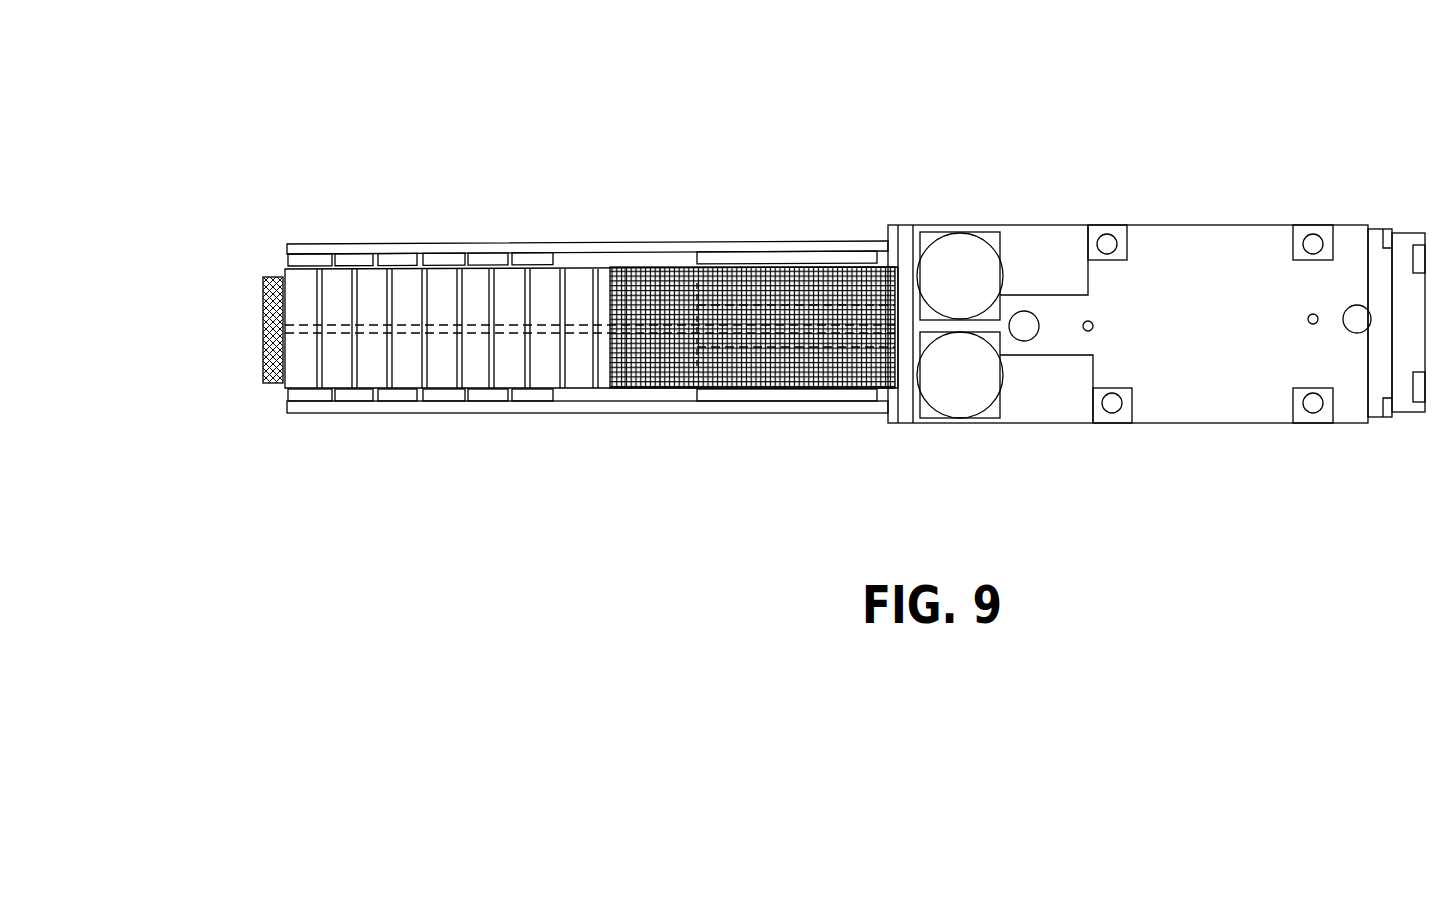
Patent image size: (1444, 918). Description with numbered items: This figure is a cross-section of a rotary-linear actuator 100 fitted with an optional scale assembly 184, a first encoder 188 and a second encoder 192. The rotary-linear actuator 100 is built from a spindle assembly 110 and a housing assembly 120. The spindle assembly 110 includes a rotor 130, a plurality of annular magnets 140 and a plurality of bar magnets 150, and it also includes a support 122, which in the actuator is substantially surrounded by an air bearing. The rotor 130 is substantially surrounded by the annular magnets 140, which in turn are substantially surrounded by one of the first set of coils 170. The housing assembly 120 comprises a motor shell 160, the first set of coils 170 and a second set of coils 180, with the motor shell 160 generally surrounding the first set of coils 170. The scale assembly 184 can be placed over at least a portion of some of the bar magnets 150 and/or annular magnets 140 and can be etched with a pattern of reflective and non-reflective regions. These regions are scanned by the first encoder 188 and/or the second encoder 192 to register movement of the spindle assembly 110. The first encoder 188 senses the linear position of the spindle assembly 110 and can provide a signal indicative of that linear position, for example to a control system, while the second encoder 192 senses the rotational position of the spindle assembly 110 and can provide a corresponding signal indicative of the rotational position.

The rotary-linear actuator 100 is at (863, 74).
The spindle assembly 110 is at (253, 373).
The housing assembly 120 is at (268, 410).
The support 122 is at (305, 330).
The rotor 130 is at (267, 277).
The annular magnets 140 is at (370, 278).
The bar magnets 150 is at (768, 270).
The motor shell 160 is at (647, 403).
The first set of coils 170 is at (357, 397).
The second set of coils 180 is at (762, 395).
The scale assembly 184 is at (647, 250).
The first encoder 188 is at (965, 250).
The second encoder 192 is at (970, 398).